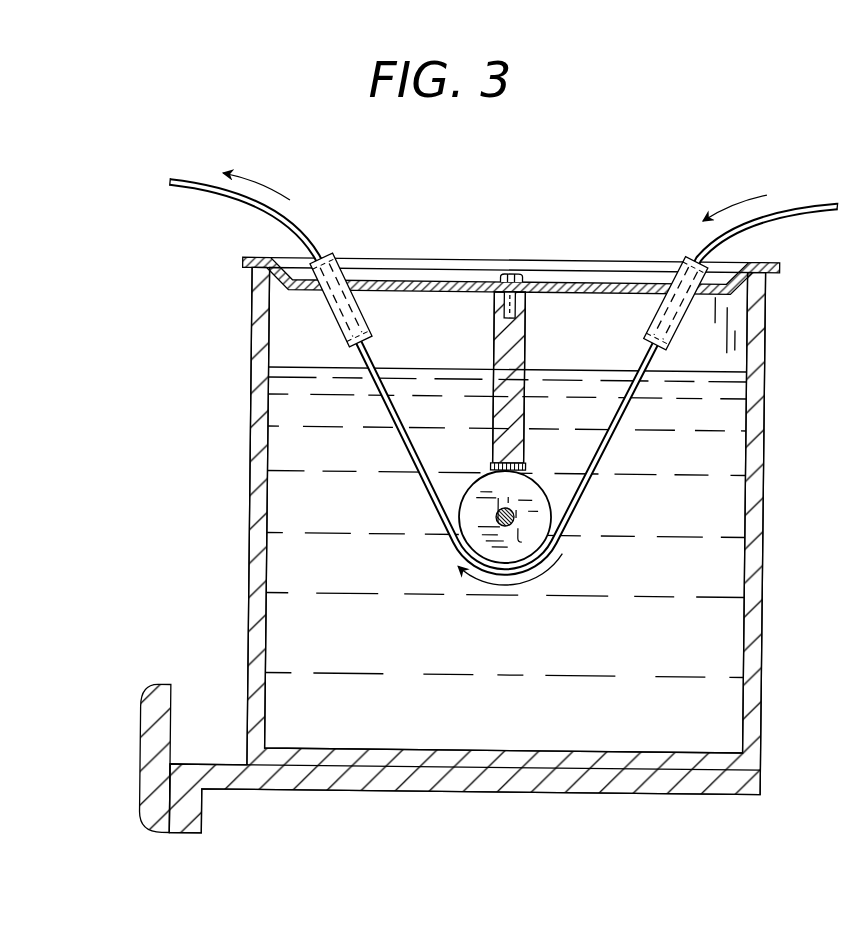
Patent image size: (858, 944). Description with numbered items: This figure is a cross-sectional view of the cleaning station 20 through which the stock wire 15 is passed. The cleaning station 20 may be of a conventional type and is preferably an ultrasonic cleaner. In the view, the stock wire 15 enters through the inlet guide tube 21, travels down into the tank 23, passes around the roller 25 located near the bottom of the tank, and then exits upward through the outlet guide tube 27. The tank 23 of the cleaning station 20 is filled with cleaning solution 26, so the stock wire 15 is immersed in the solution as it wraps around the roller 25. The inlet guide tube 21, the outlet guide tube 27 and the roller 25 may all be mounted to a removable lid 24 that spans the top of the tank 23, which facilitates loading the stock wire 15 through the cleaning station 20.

The stock wire 15 is at (252, 211).
The cleaning station 20 is at (569, 199).
The inlet guide tube 21 is at (670, 267).
The tank 23 is at (757, 495).
The removable lid 24 is at (467, 262).
The roller 25 is at (527, 485).
The cleaning solution 26 is at (663, 512).
The outlet guide tube 27 is at (340, 262).